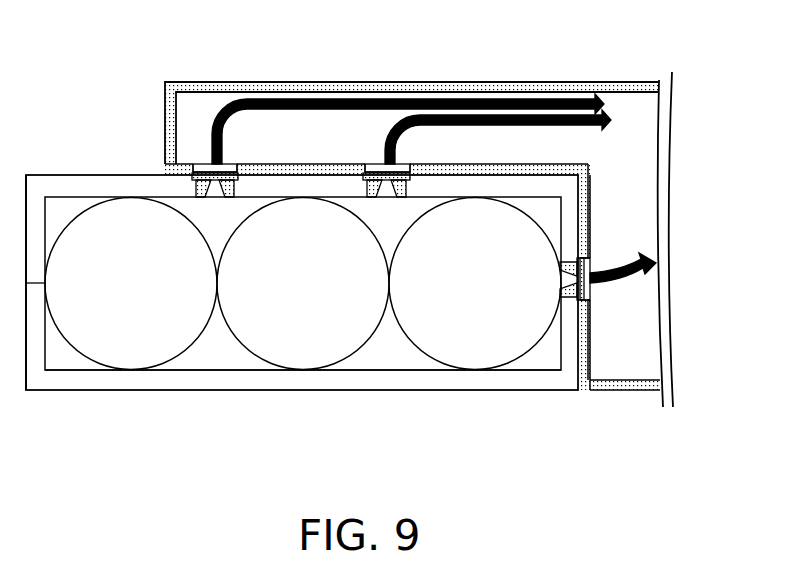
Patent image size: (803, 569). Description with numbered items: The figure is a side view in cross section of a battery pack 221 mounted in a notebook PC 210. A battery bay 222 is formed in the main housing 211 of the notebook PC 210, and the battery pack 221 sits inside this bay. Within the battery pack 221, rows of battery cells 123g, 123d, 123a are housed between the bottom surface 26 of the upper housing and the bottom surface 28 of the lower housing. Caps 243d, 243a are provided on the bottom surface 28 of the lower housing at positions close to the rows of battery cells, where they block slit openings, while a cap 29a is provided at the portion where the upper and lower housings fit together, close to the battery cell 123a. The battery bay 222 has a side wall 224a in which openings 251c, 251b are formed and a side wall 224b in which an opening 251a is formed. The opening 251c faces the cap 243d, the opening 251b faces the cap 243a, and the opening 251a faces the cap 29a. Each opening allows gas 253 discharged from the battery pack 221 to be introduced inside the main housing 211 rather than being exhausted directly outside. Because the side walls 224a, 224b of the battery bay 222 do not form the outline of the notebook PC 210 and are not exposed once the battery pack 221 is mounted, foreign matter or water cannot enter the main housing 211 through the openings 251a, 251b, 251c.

The notebook PC 210 is at (242, 57).
The main housing 211 is at (528, 78).
The side wall 224a is at (258, 163).
The side wall 224b is at (588, 205).
The bottom surface 26 is at (200, 392).
The bottom surface 28 is at (95, 175).
The battery pack 221 is at (345, 410).
The battery cell 123g is at (103, 293).
The battery cell 123d is at (275, 293).
The battery cell 123a is at (447, 293).
The cap 243d is at (193, 188).
The cap 243a is at (403, 178).
The cap 29a is at (568, 292).
The opening 251c is at (203, 164).
The opening 251b is at (366, 164).
The opening 251a is at (590, 265).
The gas 253 is at (447, 100).
The battery bay 222 is at (600, 357).